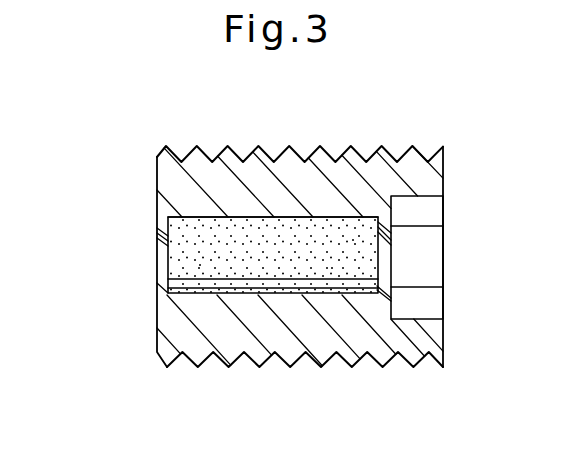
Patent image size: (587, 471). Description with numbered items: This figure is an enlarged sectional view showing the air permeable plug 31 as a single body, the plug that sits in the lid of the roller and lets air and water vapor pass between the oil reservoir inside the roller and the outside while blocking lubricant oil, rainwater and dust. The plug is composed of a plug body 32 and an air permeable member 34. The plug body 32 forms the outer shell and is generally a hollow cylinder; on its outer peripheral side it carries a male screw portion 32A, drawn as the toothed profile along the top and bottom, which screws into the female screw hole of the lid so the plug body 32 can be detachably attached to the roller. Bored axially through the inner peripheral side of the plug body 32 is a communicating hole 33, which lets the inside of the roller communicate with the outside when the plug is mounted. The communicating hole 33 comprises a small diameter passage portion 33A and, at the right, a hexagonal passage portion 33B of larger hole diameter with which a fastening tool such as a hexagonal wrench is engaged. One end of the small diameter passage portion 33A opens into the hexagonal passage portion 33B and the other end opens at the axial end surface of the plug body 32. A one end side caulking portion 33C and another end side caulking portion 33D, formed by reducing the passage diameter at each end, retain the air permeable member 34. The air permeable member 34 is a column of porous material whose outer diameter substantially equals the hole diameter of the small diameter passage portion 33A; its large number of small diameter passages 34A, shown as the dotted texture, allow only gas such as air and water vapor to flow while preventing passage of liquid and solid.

The air permeable plug 31 is at (146, 166).
The plug body 32 is at (368, 332).
The male screw portion 32A is at (316, 148).
The communicating hole 33 is at (450, 210).
The small diameter passage portion 33A is at (243, 216).
The hexagonal passage portion 33B is at (423, 269).
The one end side caulking portion 33C is at (391, 228).
The other end side caulking portion 33D is at (162, 233).
The air permeable member 34 is at (258, 262).
The small diameter passages 34A is at (353, 238).